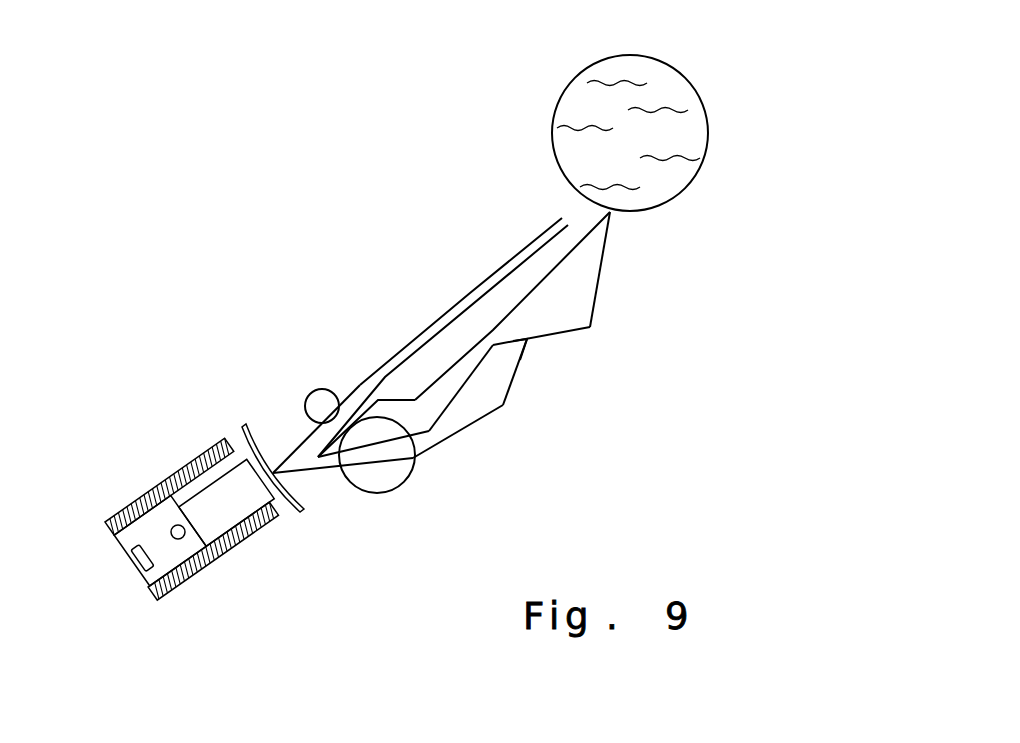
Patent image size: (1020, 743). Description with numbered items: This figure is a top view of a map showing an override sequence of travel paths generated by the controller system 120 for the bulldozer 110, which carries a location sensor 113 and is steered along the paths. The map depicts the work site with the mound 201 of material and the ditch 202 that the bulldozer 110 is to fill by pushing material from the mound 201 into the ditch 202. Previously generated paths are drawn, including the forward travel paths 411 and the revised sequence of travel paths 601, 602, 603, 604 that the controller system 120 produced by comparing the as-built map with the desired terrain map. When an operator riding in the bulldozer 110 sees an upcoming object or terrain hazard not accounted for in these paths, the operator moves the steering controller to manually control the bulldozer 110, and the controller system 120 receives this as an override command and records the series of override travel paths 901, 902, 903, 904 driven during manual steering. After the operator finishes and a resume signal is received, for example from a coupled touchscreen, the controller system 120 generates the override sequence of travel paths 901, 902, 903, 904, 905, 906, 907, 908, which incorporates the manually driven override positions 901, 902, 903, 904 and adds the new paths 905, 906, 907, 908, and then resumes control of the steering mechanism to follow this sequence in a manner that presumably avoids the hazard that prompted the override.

The bulldozer 110 is at (150, 467).
The location sensor 113 is at (178, 525).
The controller system 120 is at (128, 558).
The mound 201 is at (311, 392).
The ditch 202 is at (560, 98).
The forward travel paths 411 is at (454, 298).
The revised travel path 601 is at (433, 337).
The revised travel path 602 is at (310, 470).
The revised travel path 603 is at (452, 440).
The revised travel path 604 is at (517, 378).
The override travel path 901 is at (563, 336).
The override travel path 902 is at (600, 270).
The override travel path 903 is at (585, 232).
The override travel path 904 is at (400, 400).
The override sequence travel path 905 is at (362, 386).
The override sequence travel path 906 is at (340, 467).
The override sequence travel path 907 is at (467, 383).
The override sequence travel path 908 is at (513, 340).